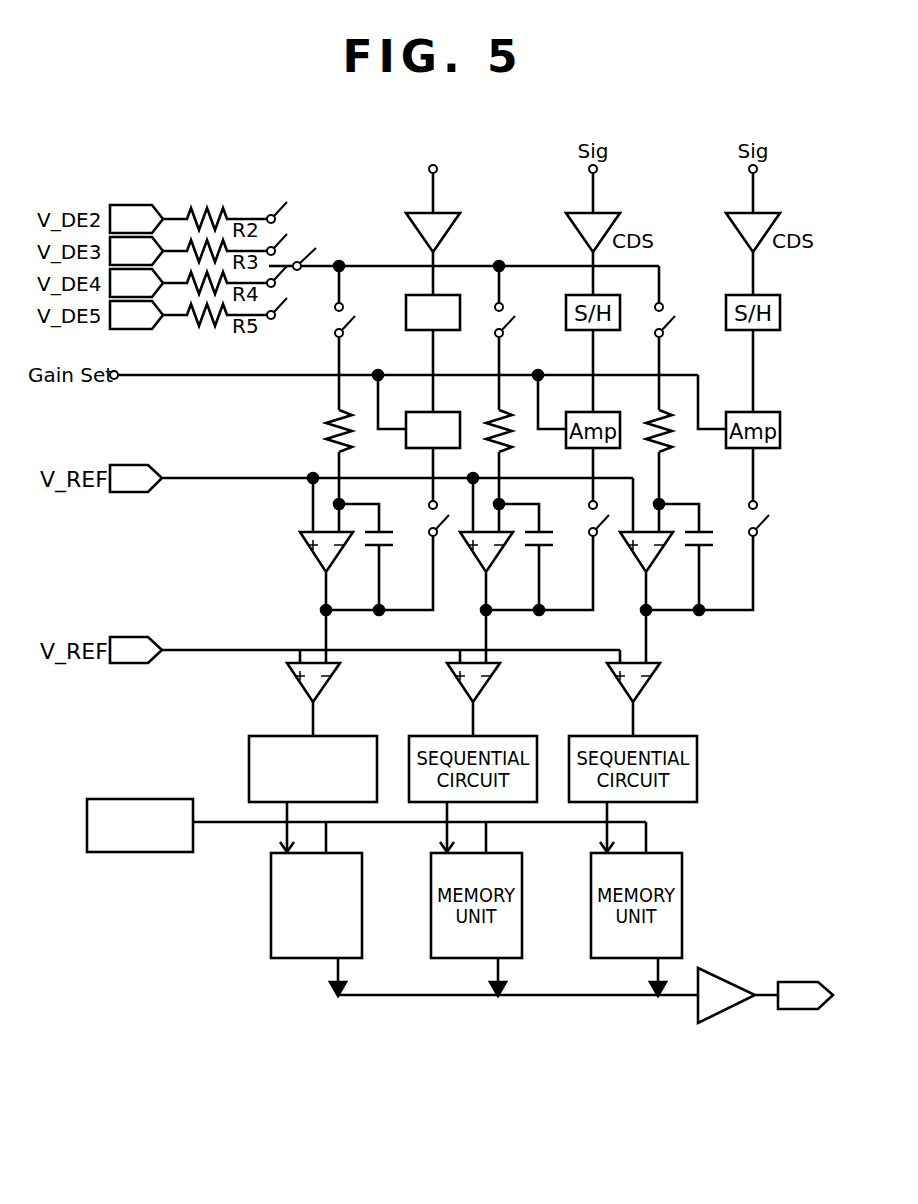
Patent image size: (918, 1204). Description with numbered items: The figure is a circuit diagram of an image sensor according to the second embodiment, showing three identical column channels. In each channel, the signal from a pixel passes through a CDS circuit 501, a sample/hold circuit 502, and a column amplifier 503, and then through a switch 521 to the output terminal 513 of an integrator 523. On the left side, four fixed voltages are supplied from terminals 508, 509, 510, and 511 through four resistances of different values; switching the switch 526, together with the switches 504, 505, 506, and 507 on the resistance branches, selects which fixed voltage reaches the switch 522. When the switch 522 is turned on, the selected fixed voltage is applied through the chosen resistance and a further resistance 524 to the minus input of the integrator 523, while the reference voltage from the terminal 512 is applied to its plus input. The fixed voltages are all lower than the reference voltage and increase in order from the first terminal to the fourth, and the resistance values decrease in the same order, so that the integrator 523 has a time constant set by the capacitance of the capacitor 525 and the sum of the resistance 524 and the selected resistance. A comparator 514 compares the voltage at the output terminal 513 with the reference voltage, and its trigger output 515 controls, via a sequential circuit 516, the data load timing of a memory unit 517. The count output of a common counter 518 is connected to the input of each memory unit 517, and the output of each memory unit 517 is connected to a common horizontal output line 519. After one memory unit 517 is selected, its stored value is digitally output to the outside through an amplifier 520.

The CDS circuit 501 is at (450, 222).
The sample/hold circuit 502 is at (440, 295).
The column amplifier 503 is at (440, 412).
The switch 504 is at (282, 208).
The switch 505 is at (282, 240).
The switch 506 is at (284, 288).
The switch 507 is at (284, 320).
The terminal 508 is at (118, 205).
The terminal 509 is at (108, 232).
The terminal 510 is at (107, 315).
The terminal 511 is at (118, 329).
The terminal 512 is at (120, 465).
The output terminal 513 is at (323, 608).
The comparator 514 is at (333, 678).
The trigger output 515 is at (312, 720).
The sequential circuit 516 is at (249, 768).
The memory unit 517 is at (271, 895).
The common counter 518 is at (150, 799).
The common horizontal output line 519 is at (517, 994).
The amplifier 520 is at (720, 978).
The switch 521 is at (440, 522).
The switch 522 is at (350, 330).
The integrator 523 is at (301, 535).
The resistance 524 is at (327, 430).
The capacitor 525 is at (392, 548).
The switch 526 is at (301, 262).